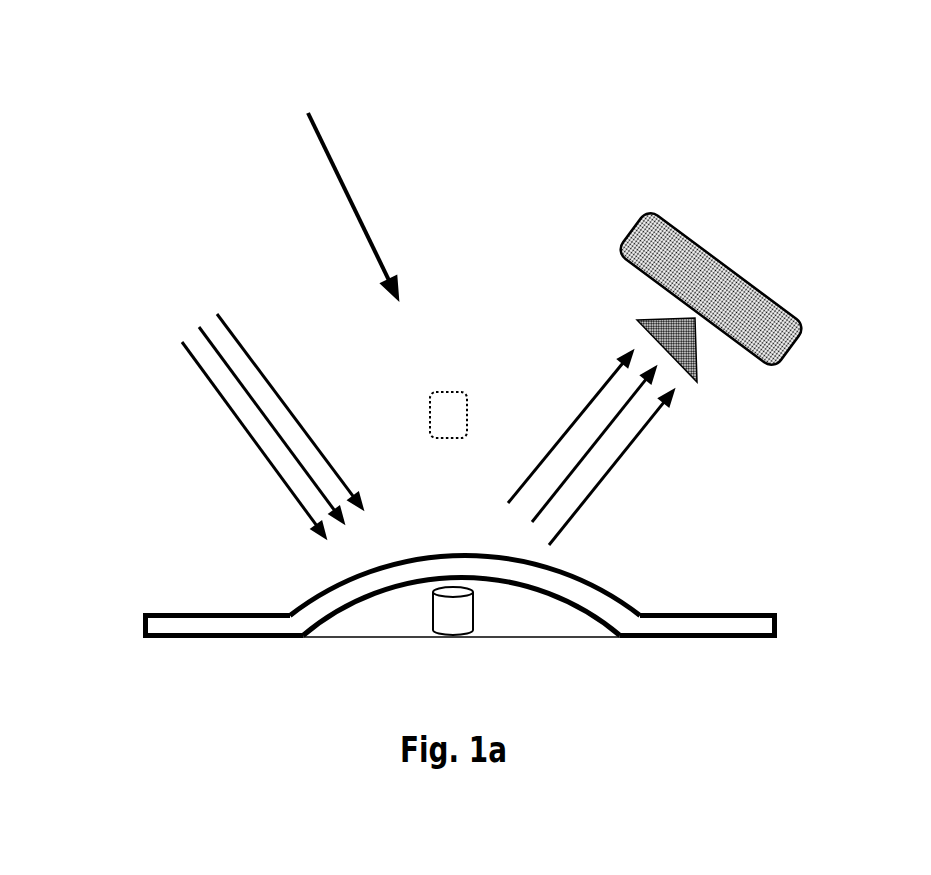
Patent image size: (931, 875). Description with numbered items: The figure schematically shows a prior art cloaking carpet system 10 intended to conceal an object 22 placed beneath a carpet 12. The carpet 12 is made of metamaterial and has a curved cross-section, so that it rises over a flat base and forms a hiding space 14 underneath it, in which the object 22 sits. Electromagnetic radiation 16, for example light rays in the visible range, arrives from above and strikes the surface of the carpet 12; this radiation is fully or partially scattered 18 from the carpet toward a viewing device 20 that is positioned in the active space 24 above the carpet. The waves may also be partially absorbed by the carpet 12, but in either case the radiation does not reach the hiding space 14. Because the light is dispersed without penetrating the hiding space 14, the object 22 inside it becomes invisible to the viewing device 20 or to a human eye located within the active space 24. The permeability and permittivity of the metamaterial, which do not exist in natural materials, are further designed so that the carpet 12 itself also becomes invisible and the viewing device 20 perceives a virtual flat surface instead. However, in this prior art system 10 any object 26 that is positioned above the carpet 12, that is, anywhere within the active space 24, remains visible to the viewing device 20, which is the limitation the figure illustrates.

The cloaking carpet system 10 is at (343, 186).
The carpet 12 is at (225, 625).
The hiding space 14 is at (340, 623).
The electromagnetic radiation 16 is at (273, 408).
The scattered radiation 18 is at (553, 467).
The viewing device 20 is at (682, 273).
The object 22 is at (450, 612).
The active space 24 is at (261, 210).
The object 26 is at (443, 427).